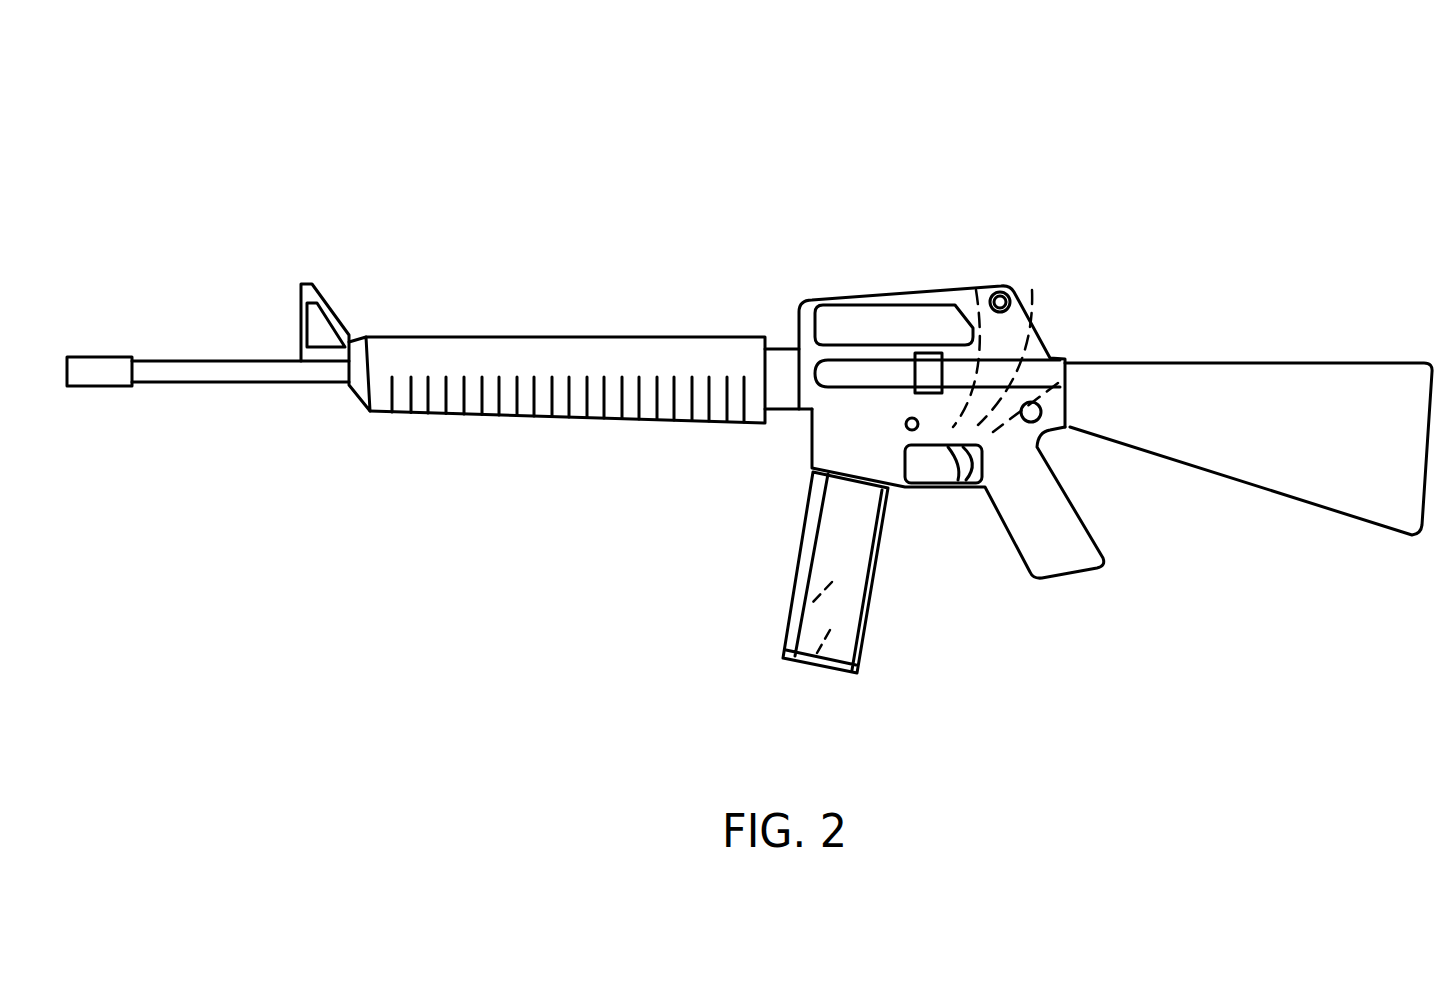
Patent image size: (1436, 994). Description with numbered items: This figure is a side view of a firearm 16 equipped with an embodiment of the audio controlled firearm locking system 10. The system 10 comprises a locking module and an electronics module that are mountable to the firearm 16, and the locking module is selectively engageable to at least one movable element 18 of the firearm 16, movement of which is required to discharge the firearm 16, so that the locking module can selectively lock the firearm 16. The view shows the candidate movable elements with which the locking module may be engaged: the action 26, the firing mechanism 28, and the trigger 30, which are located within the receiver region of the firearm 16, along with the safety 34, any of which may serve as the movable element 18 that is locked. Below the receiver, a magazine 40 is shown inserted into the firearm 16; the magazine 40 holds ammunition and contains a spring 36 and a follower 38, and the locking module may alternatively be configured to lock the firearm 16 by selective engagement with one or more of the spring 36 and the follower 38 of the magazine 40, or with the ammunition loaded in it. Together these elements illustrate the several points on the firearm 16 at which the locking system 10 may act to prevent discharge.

The audio controlled firearm locking system 10 is at (1140, 222).
The firearm 16 is at (1215, 363).
The movable element 18 is at (976, 290).
The action 26 is at (1032, 290).
The firing mechanism 28 is at (1063, 380).
The trigger 30 is at (950, 448).
The safety 34 is at (905, 418).
The spring 36 is at (832, 582).
The follower 38 is at (830, 630).
The magazine 40 is at (808, 543).